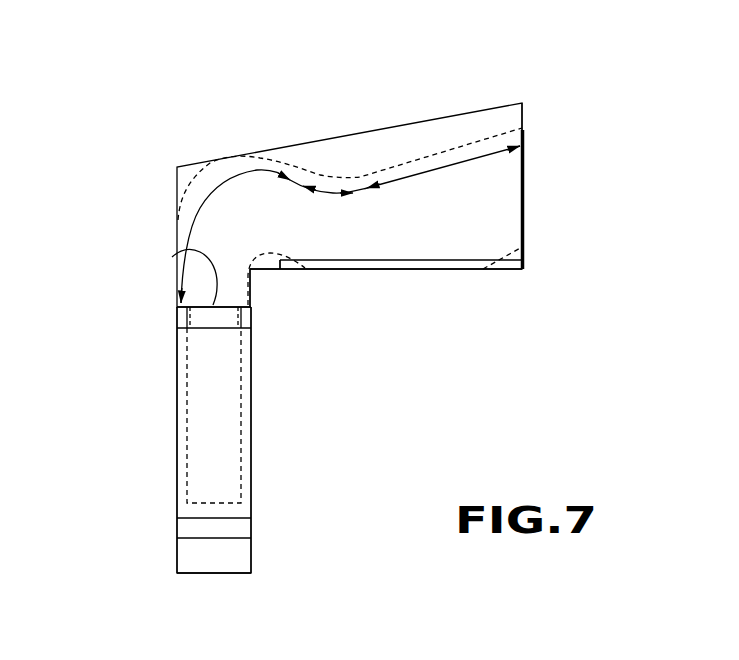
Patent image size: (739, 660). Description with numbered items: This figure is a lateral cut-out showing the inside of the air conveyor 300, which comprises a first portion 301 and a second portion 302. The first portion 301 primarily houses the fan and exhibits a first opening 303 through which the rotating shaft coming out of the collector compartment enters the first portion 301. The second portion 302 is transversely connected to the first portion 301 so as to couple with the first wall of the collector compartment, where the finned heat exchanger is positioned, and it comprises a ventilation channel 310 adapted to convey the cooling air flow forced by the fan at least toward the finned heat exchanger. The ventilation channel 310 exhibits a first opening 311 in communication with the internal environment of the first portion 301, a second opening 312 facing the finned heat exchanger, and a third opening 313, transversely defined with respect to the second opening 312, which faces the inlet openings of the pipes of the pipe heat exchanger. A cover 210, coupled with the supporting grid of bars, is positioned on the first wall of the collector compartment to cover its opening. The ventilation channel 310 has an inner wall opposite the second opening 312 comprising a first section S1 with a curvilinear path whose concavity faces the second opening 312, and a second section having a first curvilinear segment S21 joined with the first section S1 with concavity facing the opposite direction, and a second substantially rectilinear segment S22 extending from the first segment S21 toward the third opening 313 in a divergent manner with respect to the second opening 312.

The air conveyor 300 is at (182, 130).
The second portion 302 is at (507, 102).
The third opening 313 is at (524, 208).
The cover 210 is at (345, 262).
The second opening 312 is at (467, 270).
The ventilation channel 310 is at (408, 230).
The first opening 311 is at (172, 257).
The first portion 301 is at (177, 412).
The first opening 303 is at (253, 452).
The first section S1 is at (190, 221).
The first curvilinear segment S21 is at (327, 187).
The second substantially rectilinear segment S22 is at (440, 167).